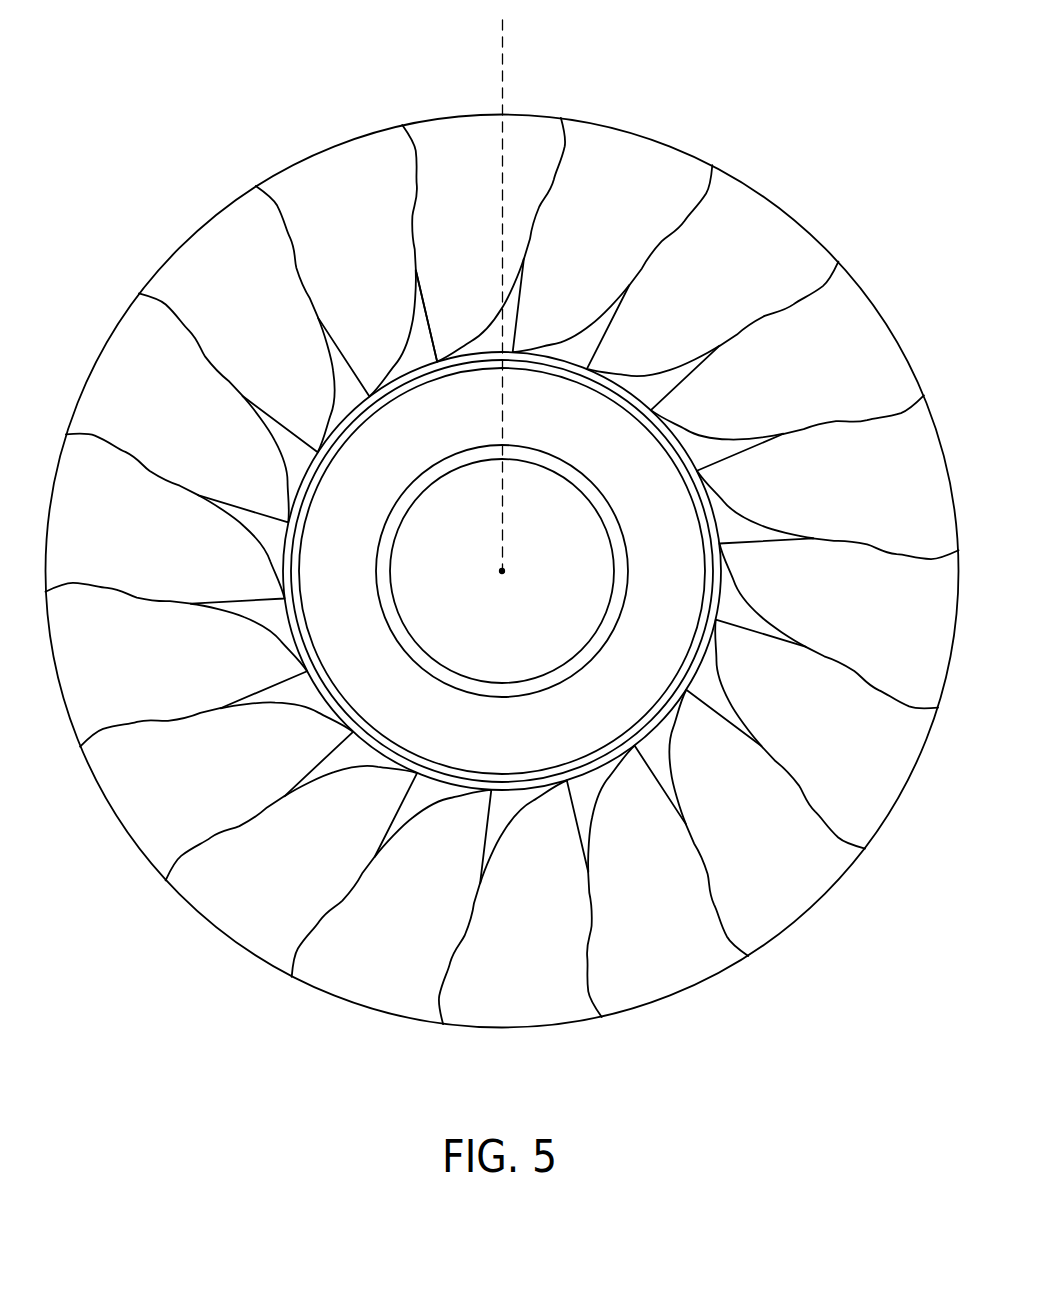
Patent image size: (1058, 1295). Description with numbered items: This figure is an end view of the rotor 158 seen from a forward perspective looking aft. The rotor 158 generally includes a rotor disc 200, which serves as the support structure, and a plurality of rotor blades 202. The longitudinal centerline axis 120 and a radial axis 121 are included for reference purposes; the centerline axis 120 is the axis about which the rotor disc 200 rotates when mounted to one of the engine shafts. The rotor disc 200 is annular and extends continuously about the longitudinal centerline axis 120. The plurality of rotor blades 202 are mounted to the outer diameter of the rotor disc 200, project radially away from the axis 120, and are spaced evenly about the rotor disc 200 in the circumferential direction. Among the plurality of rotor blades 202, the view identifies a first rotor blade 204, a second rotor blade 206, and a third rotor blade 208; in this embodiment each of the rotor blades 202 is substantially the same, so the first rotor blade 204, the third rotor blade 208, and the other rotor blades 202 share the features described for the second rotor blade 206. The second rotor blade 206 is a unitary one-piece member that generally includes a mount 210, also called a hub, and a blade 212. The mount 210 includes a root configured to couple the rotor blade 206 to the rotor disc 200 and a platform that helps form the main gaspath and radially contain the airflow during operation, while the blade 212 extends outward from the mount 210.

The rotor 158 is at (502, 527).
The radial axis 121 is at (503, 42).
The longitudinal centerline axis 120 is at (503, 572).
The rotor disc 200 is at (491, 571).
The rotor blades 202 is at (501, 566).
The first rotor blade 204 is at (378, 248).
The second rotor blade 206 is at (480, 240).
The third rotor blade 208 is at (610, 250).
The mount 210 is at (437, 360).
The blade 212 is at (421, 291).